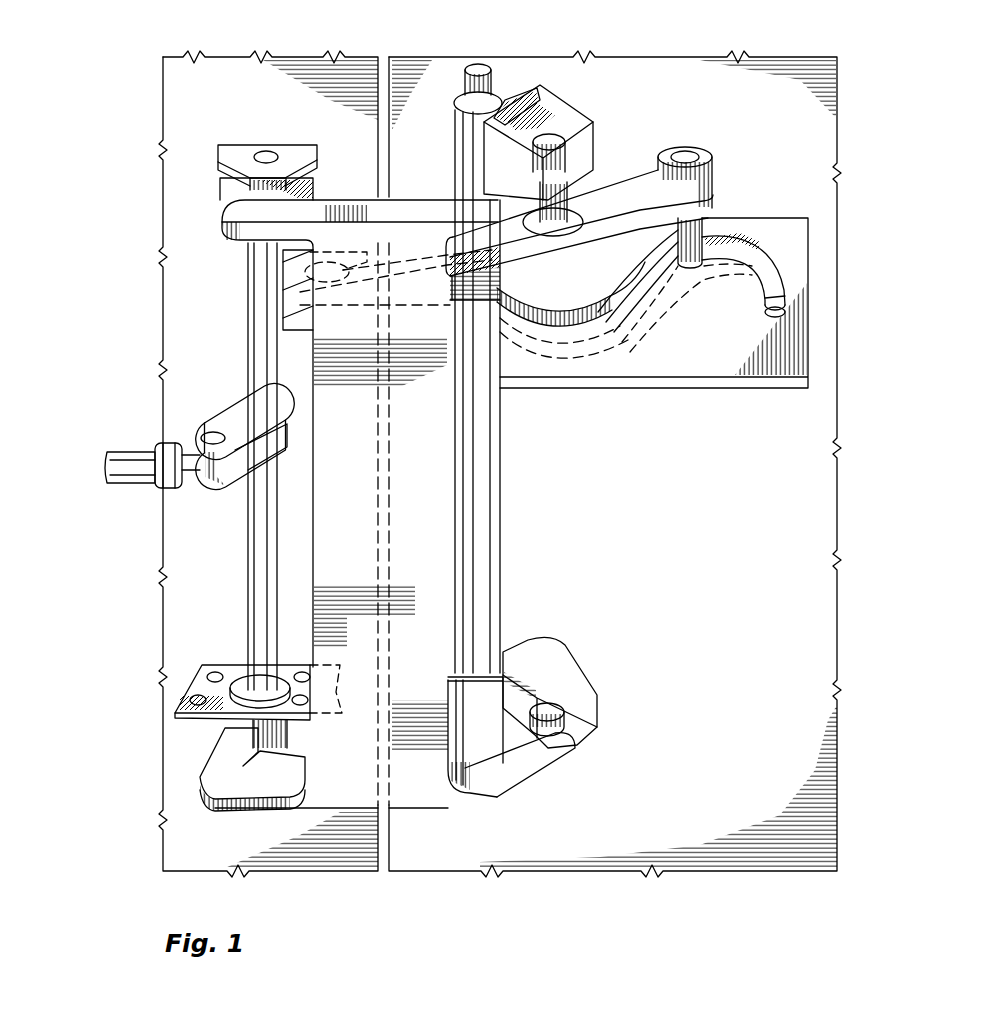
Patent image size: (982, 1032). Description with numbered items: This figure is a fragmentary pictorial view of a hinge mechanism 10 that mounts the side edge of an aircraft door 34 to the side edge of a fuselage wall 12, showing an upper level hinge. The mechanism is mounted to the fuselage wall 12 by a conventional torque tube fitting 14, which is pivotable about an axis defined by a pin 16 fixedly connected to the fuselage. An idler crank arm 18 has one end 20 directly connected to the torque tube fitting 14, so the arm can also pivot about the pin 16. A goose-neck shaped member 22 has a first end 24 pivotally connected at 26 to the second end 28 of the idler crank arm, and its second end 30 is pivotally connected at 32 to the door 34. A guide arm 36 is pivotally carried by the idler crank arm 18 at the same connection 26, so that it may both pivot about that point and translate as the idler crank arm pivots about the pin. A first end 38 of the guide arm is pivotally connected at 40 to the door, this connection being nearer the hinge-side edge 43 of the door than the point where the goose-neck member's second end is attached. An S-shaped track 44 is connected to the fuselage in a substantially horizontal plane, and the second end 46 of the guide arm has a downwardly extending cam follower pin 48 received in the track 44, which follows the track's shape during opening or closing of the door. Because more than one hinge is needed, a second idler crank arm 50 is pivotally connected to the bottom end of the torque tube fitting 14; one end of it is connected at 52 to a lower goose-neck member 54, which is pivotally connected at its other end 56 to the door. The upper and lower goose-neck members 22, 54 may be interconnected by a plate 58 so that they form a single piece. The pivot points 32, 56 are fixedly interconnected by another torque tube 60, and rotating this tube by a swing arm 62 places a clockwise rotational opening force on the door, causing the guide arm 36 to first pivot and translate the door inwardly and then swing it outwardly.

The hinge mechanism 10 is at (678, 85).
The fuselage wall 12 is at (670, 500).
The torque tube fitting 14 is at (477, 488).
The pin 16 is at (497, 92).
The idler crank arm 18 is at (560, 104).
The one end of idler crank arm 20 is at (528, 92).
The goose-neck shaped member 22 is at (346, 205).
The first end of goose-neck member 24 is at (573, 182).
The pivotal connection 26 is at (533, 142).
The second end of idler crank arm 28 is at (577, 146).
The second end of goose-neck member 30 is at (243, 214).
The pivotal connection 32 is at (265, 156).
The aircraft door 34 is at (228, 318).
The guide arm 36 is at (602, 268).
The first end of guide arm 38 is at (372, 334).
The pivotal connection 40 is at (310, 252).
The hinge-side edge of door 43 is at (380, 112).
The S-shaped track 44 is at (736, 243).
The second end of guide arm 46 is at (706, 180).
The cam follower pin 48 is at (694, 252).
The second idler crank arm 50 is at (560, 667).
The connection 52 is at (587, 710).
The lower goose-neck member 54 is at (487, 777).
The other end of lower goose-neck member 56 is at (223, 728).
The plate 58 is at (430, 574).
The torque tube 60 is at (257, 597).
The swing arm 62 is at (224, 490).